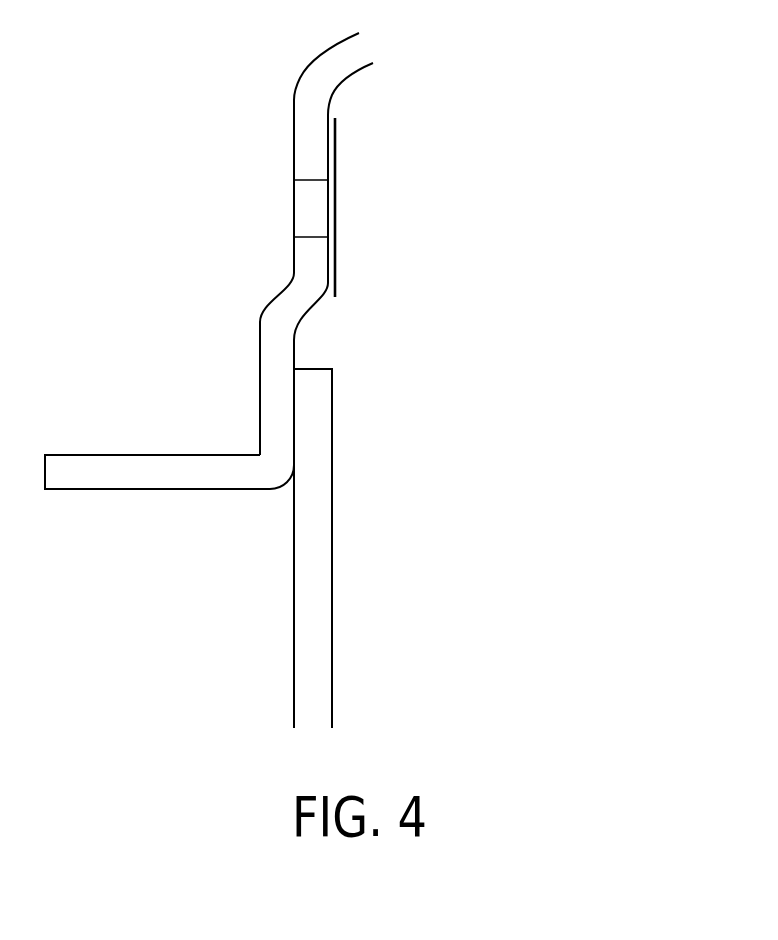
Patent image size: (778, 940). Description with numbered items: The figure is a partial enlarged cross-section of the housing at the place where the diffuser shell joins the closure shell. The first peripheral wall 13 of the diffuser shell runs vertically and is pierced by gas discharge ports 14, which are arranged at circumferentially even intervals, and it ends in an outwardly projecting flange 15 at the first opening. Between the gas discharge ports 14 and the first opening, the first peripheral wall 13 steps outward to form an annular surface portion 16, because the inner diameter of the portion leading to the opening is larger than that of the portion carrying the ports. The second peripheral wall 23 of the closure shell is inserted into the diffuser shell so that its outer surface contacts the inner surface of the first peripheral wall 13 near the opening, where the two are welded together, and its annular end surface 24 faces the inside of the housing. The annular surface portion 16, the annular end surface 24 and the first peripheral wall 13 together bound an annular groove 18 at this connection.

The first peripheral wall 13 is at (292, 142).
The gas discharge ports 14 is at (294, 207).
The flange 15 is at (119, 455).
The annular surface portion 16 is at (298, 303).
The annular groove 18 is at (311, 339).
The second peripheral wall 23 is at (294, 585).
The annular end surface 24 is at (316, 367).